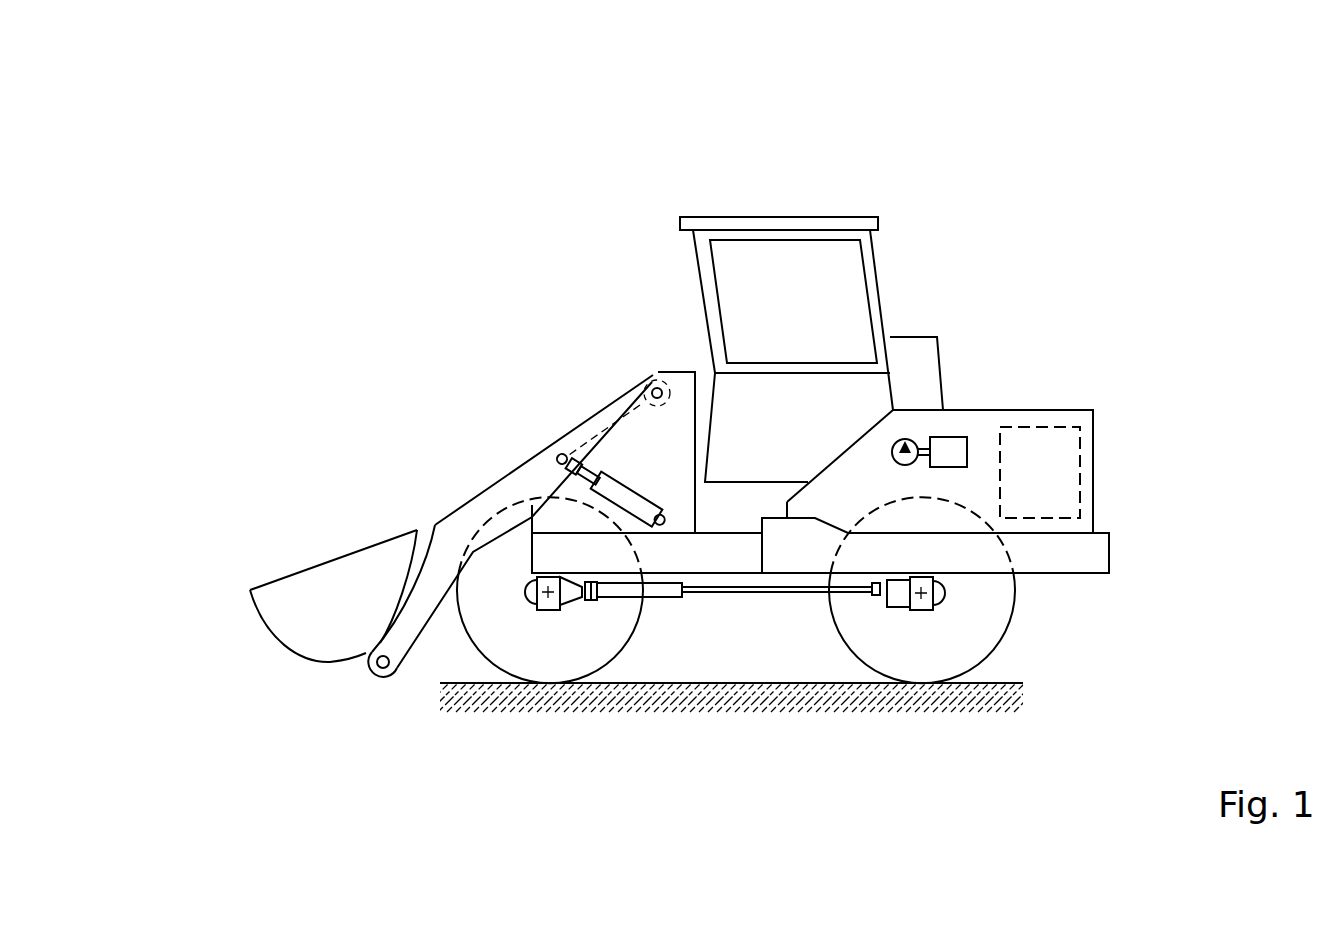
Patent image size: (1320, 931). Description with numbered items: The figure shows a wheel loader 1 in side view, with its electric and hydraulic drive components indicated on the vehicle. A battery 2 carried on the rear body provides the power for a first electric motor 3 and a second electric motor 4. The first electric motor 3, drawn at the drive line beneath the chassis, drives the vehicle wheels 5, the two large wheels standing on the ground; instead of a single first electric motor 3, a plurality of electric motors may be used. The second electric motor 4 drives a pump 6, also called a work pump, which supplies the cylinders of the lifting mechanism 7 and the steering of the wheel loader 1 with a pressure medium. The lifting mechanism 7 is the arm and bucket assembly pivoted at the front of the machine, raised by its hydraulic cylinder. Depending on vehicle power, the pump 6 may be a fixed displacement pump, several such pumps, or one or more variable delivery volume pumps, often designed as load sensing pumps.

The wheel loader 1 is at (578, 235).
The battery 2 is at (1050, 473).
The first electric motor 3 is at (897, 607).
The second electric motor 4 is at (950, 453).
The vehicle wheels 5 is at (560, 643).
The pump 6 is at (907, 452).
The lifting mechanism 7 is at (450, 474).